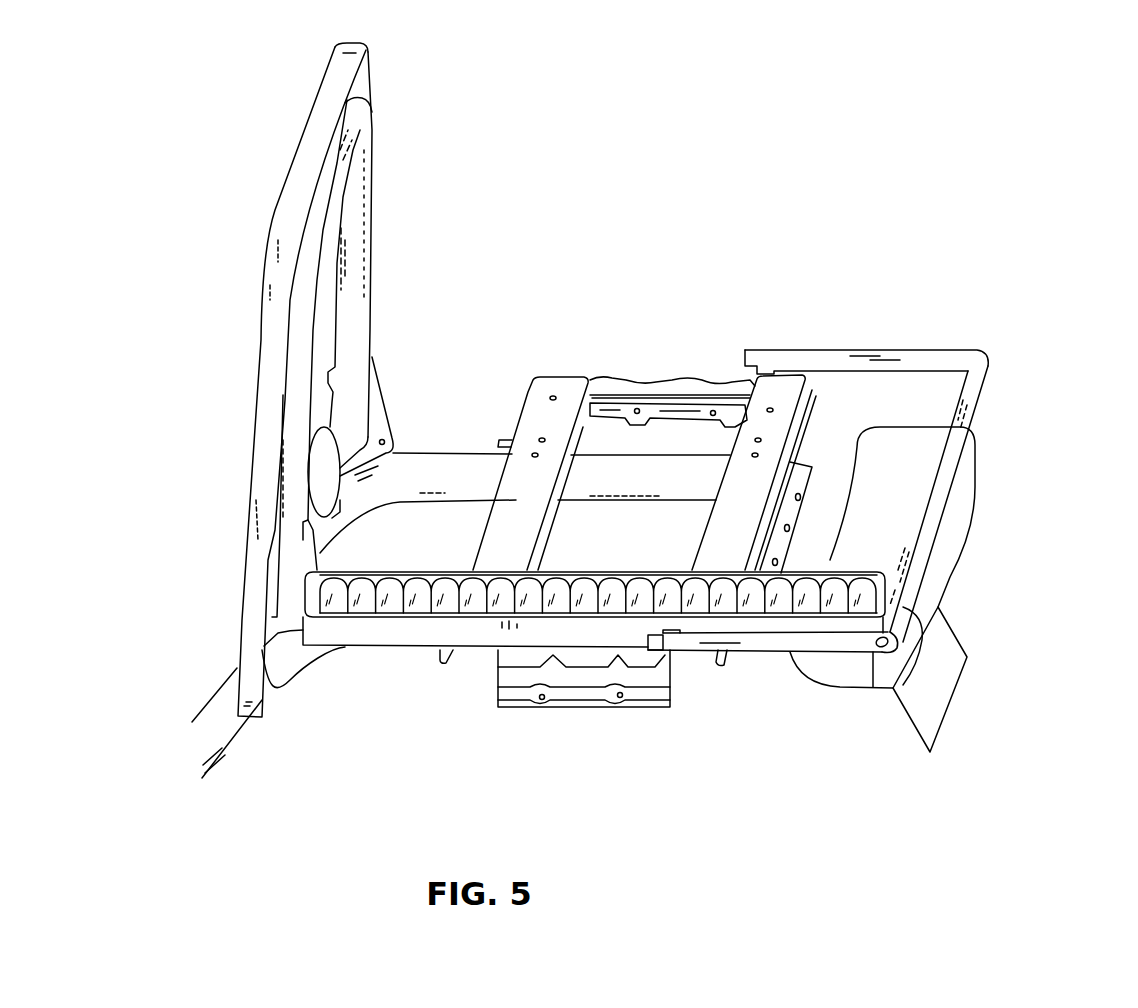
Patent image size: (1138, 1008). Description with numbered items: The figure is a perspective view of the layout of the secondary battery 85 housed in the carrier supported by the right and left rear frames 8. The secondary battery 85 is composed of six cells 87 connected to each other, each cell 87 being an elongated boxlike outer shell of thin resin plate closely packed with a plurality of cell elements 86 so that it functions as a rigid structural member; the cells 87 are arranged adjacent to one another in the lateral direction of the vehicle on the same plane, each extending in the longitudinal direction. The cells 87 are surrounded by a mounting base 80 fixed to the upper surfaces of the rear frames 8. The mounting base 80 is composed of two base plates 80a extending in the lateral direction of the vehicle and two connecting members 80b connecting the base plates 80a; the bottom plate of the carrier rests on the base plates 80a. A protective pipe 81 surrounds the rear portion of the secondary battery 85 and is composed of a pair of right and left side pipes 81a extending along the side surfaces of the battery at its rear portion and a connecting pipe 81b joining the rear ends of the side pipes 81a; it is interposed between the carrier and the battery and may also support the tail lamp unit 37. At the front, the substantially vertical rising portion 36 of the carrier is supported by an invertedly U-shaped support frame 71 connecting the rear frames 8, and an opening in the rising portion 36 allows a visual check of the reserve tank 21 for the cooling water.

The rear frame 8 is at (445, 478).
The reserve tank 21 is at (372, 437).
The rising portion 36 is at (267, 388).
The tail lamp unit 37 is at (947, 545).
The support frame 71 is at (357, 213).
The mounting base 80 is at (648, 537).
The base plate 80a is at (560, 390).
The connecting member 80b is at (678, 390).
The protective pipe 81 is at (877, 501).
The side pipe 81a is at (865, 350).
The connecting pipe 81b is at (930, 498).
The secondary battery 85 is at (594, 676).
The cell element 86 is at (413, 600).
The cell 87 is at (377, 628).